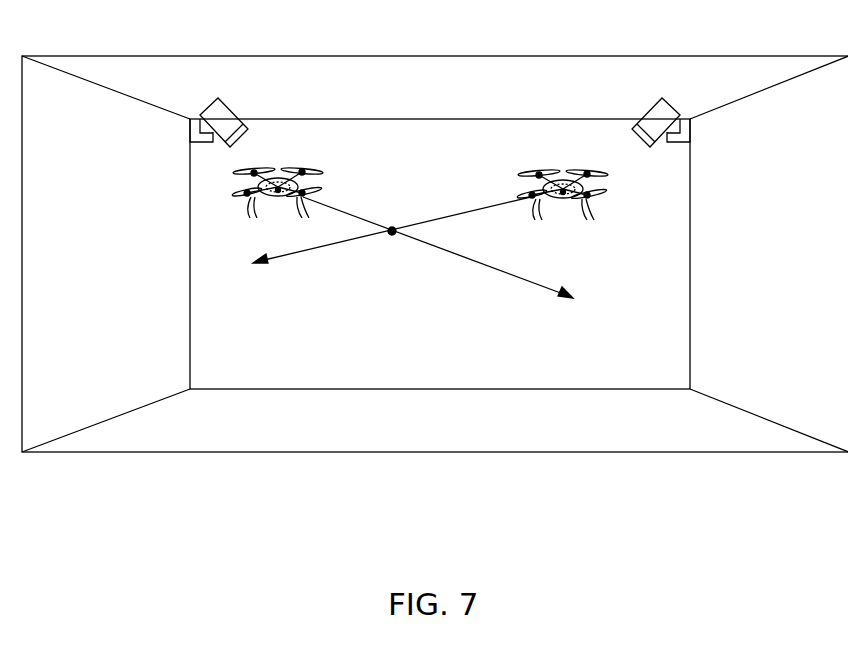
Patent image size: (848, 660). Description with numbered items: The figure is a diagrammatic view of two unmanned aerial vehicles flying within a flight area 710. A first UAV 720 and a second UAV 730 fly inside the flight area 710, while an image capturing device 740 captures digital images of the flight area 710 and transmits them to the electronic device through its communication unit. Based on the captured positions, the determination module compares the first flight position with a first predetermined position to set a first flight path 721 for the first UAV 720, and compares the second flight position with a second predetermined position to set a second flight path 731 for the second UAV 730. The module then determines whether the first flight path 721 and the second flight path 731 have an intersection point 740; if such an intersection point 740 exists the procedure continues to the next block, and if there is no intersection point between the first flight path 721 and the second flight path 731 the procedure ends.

The flight area 710 is at (377, 70).
The first UAV 720 is at (315, 167).
The first flight path 721 is at (335, 212).
The second UAV 730 is at (530, 167).
The second flight path 731 is at (435, 220).
The image capturing device 740 is at (230, 112).